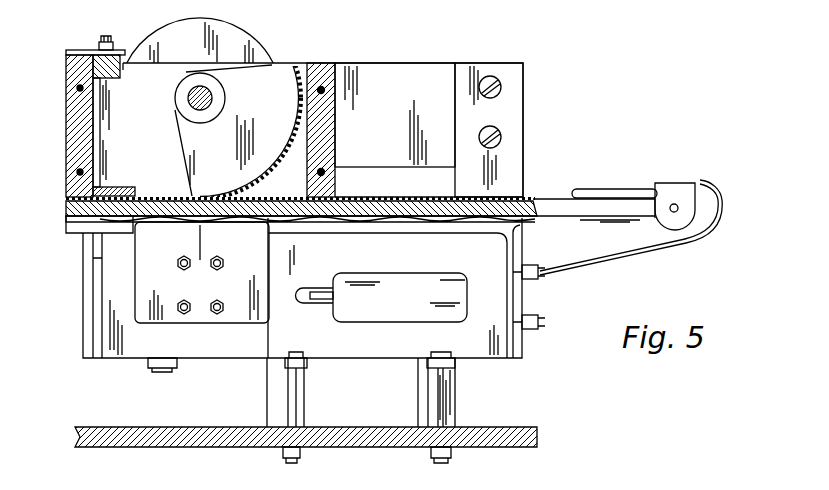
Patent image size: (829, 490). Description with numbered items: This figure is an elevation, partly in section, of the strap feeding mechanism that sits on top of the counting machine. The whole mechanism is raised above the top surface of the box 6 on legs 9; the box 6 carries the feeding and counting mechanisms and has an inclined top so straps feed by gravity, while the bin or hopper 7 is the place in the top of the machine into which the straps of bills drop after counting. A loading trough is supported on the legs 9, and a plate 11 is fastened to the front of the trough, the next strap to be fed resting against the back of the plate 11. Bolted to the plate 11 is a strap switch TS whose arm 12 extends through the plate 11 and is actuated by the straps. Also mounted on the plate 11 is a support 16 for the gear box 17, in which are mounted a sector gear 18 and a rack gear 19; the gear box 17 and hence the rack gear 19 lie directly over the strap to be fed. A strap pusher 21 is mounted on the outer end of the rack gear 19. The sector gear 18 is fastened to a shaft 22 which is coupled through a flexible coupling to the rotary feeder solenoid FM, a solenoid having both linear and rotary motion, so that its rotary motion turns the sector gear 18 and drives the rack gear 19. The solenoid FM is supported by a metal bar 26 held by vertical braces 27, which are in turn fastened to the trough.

The rotary feeder solenoid FM is at (237, 40).
The bin or hopper 7 is at (513, 59).
The metal bar 26 is at (442, 70).
The vertical braces 27 is at (508, 105).
The gear box 17 is at (72, 115).
The shaft 22 is at (188, 98).
The sector gear 18 is at (200, 160).
The rack gear 19 is at (70, 210).
The strap pusher 21 is at (708, 232).
The plate 11 is at (490, 297).
The support 16 is at (165, 276).
The strap switch TS is at (420, 283).
The arm 12 is at (328, 303).
The legs 9 is at (443, 410).
The box 6 is at (240, 435).